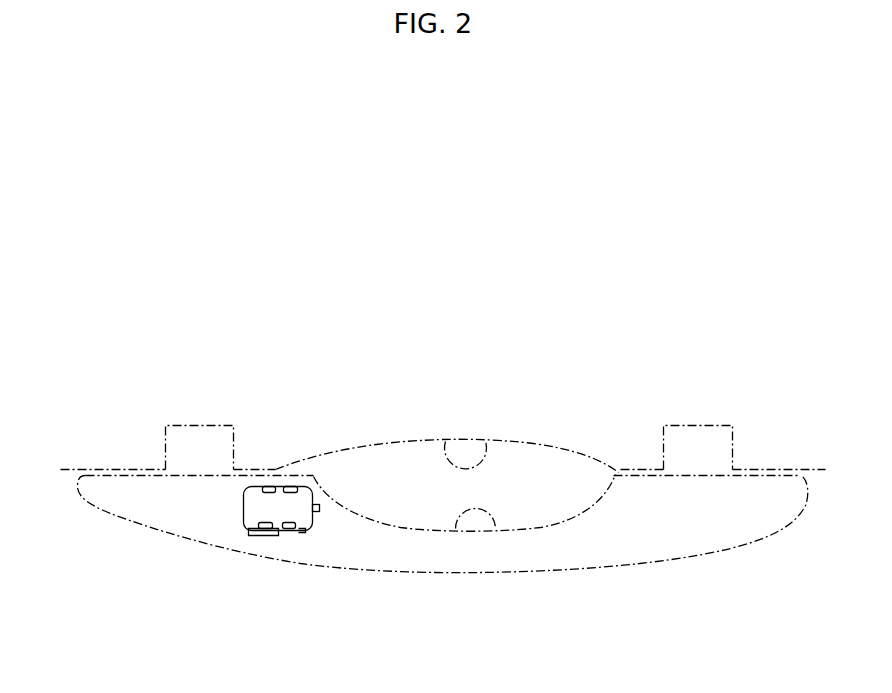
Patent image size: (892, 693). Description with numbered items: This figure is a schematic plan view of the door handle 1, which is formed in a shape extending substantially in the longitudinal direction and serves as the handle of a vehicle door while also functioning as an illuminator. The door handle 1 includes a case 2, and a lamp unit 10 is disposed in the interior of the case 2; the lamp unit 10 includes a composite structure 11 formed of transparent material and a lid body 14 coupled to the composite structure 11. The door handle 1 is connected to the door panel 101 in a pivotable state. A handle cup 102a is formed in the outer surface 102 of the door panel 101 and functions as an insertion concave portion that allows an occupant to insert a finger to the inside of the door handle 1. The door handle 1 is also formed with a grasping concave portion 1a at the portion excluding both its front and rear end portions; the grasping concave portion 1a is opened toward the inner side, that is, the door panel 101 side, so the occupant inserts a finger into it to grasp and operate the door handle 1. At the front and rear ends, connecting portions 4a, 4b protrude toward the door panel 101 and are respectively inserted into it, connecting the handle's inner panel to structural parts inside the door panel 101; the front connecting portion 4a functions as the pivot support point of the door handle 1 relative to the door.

The door handle 1 is at (342, 567).
The grasping concave portion 1a is at (494, 533).
The case 2 is at (667, 562).
The front connecting portion 4a is at (702, 425).
The rear connecting portion 4b is at (193, 425).
The lamp unit 10 is at (307, 505).
The composite structure 11 is at (258, 537).
The lid body 14 is at (303, 495).
The door panel 101 is at (67, 469).
The outer surface 102 is at (817, 470).
The handle cup 102a is at (482, 440).